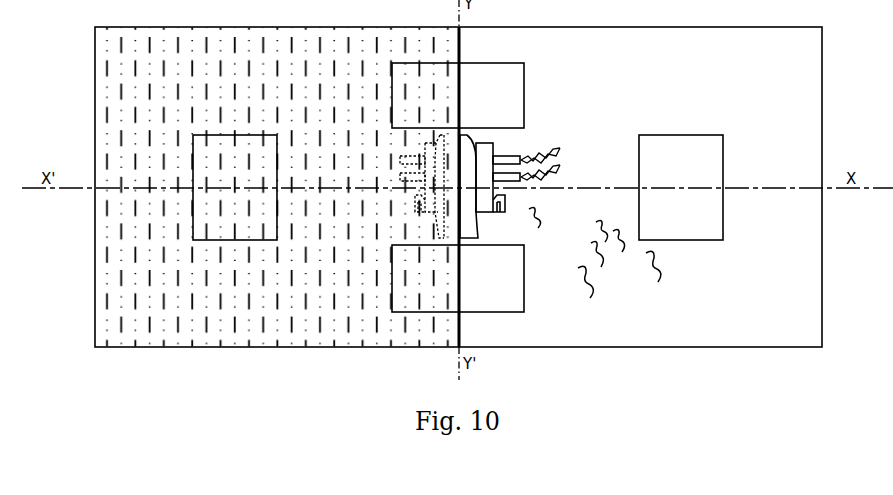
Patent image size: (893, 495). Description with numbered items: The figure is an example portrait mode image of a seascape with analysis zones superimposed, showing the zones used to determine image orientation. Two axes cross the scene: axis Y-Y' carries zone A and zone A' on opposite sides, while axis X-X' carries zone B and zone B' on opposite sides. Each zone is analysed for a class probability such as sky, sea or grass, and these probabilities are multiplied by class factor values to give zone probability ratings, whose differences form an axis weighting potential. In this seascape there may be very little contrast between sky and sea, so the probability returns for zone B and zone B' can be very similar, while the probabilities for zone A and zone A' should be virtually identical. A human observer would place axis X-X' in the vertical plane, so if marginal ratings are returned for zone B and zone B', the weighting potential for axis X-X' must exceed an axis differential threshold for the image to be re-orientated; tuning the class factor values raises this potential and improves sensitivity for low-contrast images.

The zone A is at (458, 95).
The zone A' is at (458, 278).
The zone B is at (681, 187).
The zone B' is at (235, 187).